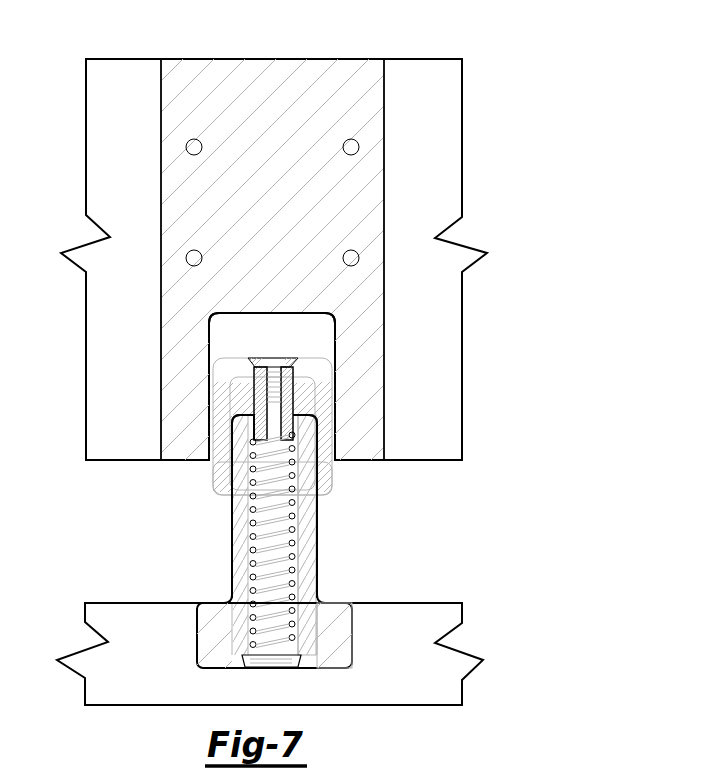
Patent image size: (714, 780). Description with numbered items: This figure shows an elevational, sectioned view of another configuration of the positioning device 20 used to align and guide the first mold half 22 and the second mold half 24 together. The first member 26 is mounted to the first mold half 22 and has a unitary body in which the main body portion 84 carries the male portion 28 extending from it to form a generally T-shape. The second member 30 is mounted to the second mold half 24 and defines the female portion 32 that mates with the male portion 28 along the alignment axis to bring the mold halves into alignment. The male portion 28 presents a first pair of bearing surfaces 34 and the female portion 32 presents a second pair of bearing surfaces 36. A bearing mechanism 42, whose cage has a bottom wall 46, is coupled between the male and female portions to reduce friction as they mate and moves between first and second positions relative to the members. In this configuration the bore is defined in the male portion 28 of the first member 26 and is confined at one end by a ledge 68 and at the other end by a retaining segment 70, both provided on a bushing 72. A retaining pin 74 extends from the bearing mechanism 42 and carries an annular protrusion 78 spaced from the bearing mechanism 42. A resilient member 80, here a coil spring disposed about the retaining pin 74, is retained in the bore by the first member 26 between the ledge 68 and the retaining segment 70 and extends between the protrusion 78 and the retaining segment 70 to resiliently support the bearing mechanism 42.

The positioning device 20 is at (400, 520).
The first mold half 22 is at (450, 677).
The second mold half 24 is at (452, 125).
The first member 26 is at (208, 650).
The male portion 28 is at (233, 517).
The second member 30 is at (292, 65).
The female portion 32 is at (377, 357).
The first pair of bearing surfaces 34 is at (228, 545).
The second pair of bearing surfaces 36 is at (208, 328).
The bearing mechanism 42 is at (196, 474).
The bottom wall 46 is at (222, 368).
The ledge 68 is at (298, 400).
The retaining segment 70 is at (285, 663).
The bushing 72 is at (298, 557).
The retaining pin 74 is at (293, 383).
The protrusion 78 is at (250, 425).
The resilient member 80 is at (253, 578).
The main body portion 84 is at (337, 630).